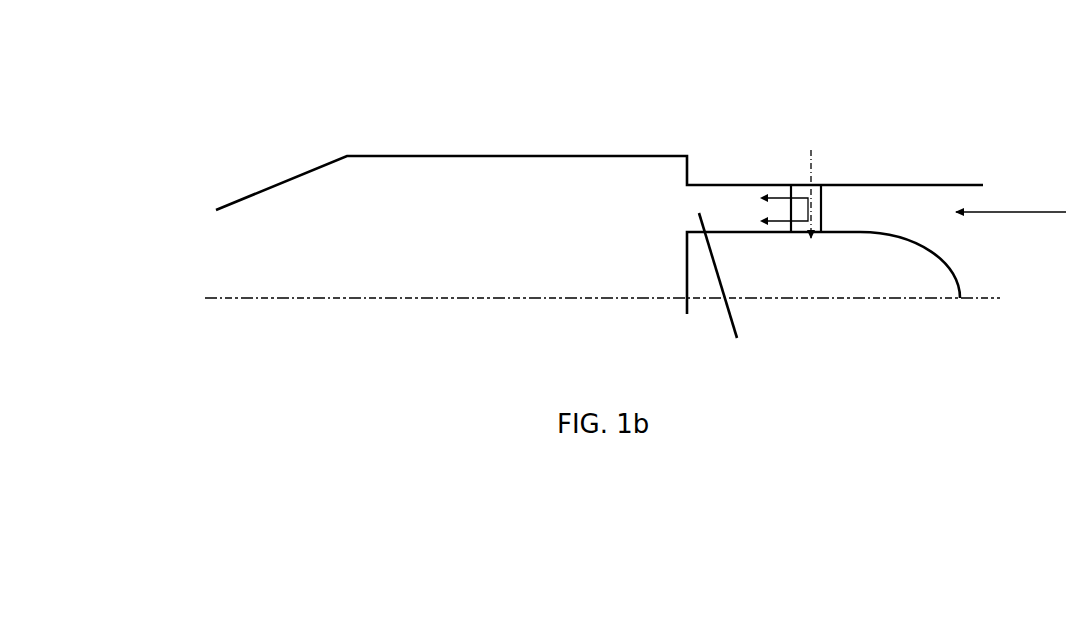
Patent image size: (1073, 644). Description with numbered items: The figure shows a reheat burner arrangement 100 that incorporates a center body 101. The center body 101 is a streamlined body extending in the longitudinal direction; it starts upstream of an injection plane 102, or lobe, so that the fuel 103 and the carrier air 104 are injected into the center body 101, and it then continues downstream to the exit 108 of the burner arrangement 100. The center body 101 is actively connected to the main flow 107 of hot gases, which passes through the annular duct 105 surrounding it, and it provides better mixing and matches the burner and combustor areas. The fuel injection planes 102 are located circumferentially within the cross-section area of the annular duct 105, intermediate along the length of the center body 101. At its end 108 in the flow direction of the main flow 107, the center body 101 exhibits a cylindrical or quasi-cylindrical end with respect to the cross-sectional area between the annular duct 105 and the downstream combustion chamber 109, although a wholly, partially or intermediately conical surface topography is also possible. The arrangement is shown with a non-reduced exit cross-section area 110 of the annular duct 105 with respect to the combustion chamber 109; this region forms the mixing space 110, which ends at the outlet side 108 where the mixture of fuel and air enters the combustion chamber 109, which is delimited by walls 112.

The reheat burner arrangement 100 is at (724, 24).
The center body 101 is at (792, 277).
The injection plane 102 is at (815, 207).
The fuel 103 is at (783, 182).
The carrier air 104 is at (812, 170).
The annular duct 105 is at (756, 214).
The main flow 107 is at (987, 214).
The exit 108 is at (685, 270).
The combustion chamber 109 is at (378, 245).
The exit cross-section area 110 is at (735, 293).
The walls 112 is at (528, 153).